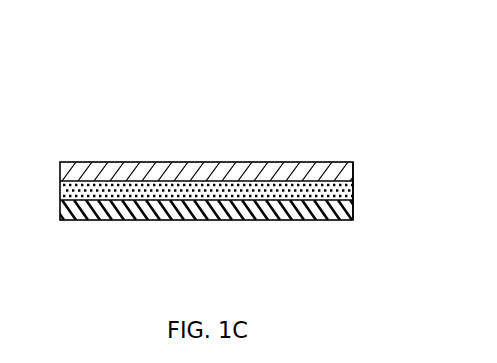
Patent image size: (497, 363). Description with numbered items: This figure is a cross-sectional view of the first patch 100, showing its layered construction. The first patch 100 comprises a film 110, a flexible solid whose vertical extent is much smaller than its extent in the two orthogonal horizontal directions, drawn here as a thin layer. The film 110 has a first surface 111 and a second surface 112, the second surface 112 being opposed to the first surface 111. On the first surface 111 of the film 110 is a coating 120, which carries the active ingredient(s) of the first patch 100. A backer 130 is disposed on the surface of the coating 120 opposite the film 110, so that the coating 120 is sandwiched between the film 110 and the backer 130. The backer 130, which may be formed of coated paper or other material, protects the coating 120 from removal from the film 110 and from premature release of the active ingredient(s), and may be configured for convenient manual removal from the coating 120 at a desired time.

The first patch 100 is at (222, 63).
The film 110 is at (140, 146).
The first surface 111 is at (252, 182).
The second surface 112 is at (272, 162).
The coating 120 is at (353, 190).
The backer 130 is at (208, 220).